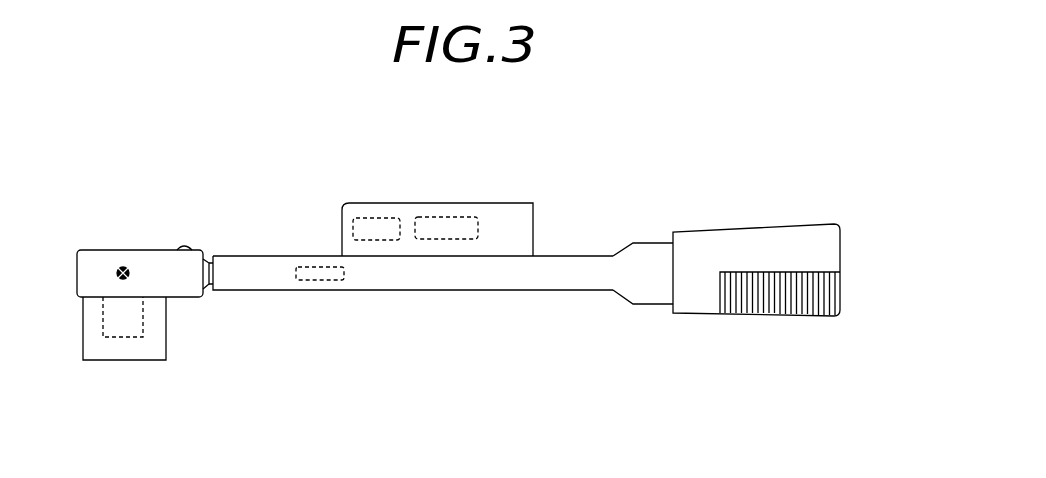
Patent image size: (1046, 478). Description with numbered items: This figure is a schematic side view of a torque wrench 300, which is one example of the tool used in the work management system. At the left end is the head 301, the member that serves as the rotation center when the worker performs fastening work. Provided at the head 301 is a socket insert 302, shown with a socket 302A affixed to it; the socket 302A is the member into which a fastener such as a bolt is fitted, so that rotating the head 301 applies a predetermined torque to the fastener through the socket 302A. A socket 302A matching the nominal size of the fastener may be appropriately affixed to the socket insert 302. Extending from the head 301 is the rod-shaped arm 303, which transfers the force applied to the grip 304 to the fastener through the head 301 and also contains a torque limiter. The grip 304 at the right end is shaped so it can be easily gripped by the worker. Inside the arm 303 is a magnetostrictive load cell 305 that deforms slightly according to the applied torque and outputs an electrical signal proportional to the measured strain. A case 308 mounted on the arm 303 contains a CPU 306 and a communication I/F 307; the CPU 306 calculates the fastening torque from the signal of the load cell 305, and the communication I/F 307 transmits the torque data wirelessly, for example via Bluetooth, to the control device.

The torque wrench 300 is at (619, 350).
The head 301 is at (108, 257).
The socket insert 302 is at (123, 340).
The socket 302A is at (160, 328).
The arm 303 is at (478, 278).
The grip 304 is at (766, 250).
The magnetostrictive load cell 305 is at (323, 283).
The CPU 306 is at (372, 213).
The communication I/F 307 is at (445, 213).
The case 308 is at (510, 205).